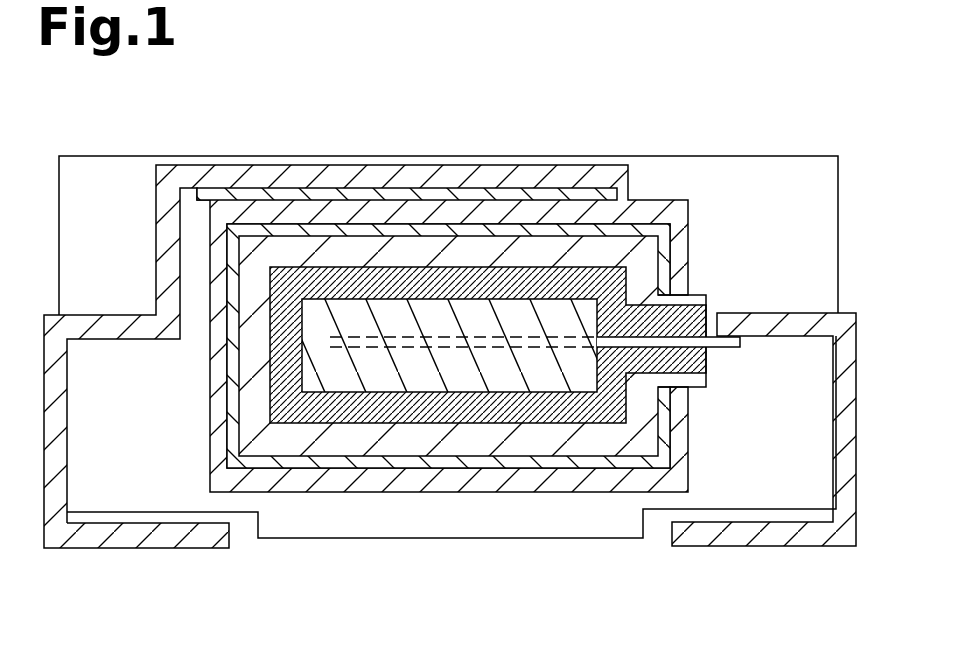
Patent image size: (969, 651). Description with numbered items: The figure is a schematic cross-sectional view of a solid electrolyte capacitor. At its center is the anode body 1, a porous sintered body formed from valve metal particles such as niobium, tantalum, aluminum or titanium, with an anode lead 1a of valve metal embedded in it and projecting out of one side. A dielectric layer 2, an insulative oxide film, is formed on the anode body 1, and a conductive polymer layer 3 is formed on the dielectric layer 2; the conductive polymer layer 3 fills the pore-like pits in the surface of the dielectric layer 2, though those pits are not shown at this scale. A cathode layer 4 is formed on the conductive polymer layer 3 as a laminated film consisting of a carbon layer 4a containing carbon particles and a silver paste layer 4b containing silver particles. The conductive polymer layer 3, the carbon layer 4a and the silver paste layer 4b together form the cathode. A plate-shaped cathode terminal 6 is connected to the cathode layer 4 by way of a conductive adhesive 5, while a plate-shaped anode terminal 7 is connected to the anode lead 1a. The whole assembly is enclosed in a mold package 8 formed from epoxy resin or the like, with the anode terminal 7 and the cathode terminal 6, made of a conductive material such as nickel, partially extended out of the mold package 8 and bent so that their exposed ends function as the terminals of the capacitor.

The anode body 1 is at (351, 313).
The anode lead 1a is at (710, 337).
The dielectric layer 2 is at (357, 412).
The conductive polymer layer 3 is at (492, 442).
The cathode layer 4 is at (366, 393).
The carbon layer 4a is at (570, 470).
The silver paste layer 4b is at (623, 493).
The conductive adhesive 5 is at (583, 190).
The cathode terminal 6 is at (193, 541).
The anode terminal 7 is at (763, 538).
The mold package 8 is at (110, 167).